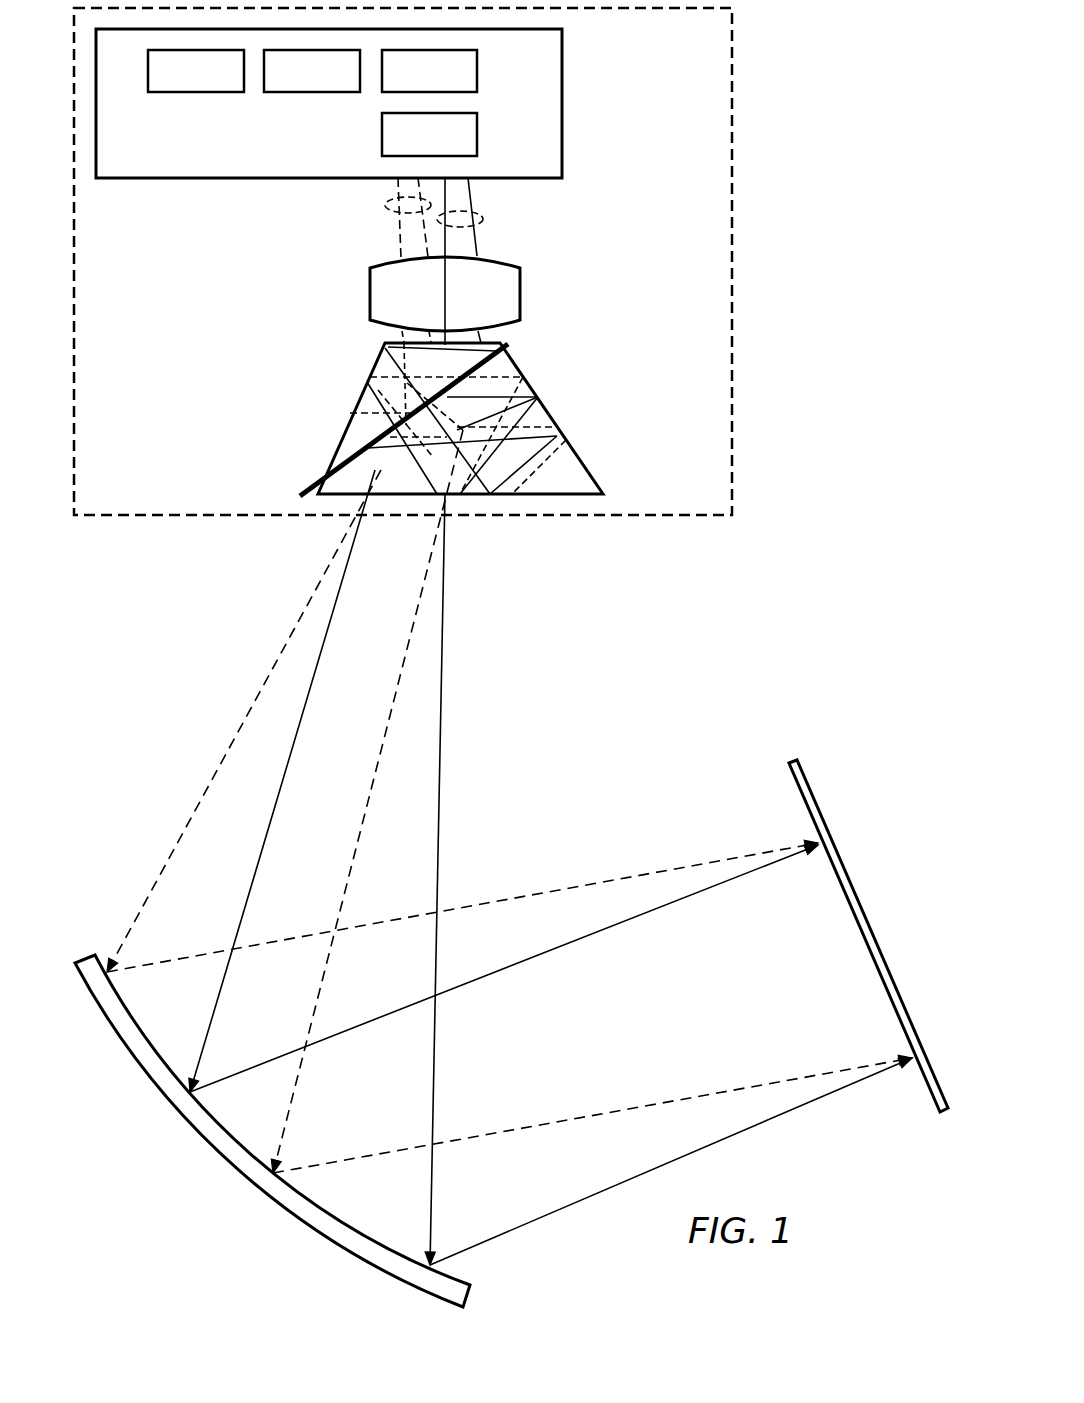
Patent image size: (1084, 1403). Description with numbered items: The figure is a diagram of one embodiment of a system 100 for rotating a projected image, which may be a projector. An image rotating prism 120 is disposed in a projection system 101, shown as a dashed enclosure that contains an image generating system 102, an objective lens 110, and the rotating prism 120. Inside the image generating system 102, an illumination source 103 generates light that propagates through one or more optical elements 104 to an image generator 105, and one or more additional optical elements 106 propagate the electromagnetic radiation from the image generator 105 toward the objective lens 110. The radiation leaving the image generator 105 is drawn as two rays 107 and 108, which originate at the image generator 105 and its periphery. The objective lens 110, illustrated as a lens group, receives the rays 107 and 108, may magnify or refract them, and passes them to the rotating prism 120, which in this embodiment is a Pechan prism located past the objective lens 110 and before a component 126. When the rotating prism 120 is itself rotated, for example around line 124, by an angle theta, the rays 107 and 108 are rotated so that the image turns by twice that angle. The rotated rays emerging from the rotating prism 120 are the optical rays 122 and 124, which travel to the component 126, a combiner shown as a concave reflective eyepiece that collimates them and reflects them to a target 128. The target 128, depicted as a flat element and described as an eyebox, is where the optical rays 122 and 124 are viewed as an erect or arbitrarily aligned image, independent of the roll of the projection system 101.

The system for rotating a projected image 100 is at (511, 657).
The projection system 101 is at (441, 261).
The image generating system 102 is at (370, 103).
The illumination source 103 is at (193, 92).
The optical elements 104 is at (308, 92).
The image generator 105 is at (477, 70).
The additional optical elements 106 is at (477, 135).
The ray 107 is at (385, 203).
The ray 108 is at (484, 216).
The objective lens 110 is at (520, 292).
The rotating prism 120 is at (588, 400).
The optical ray 122 is at (245, 722).
The optical ray 124 is at (440, 765).
The component 126 is at (217, 1158).
The target 128 is at (875, 933).